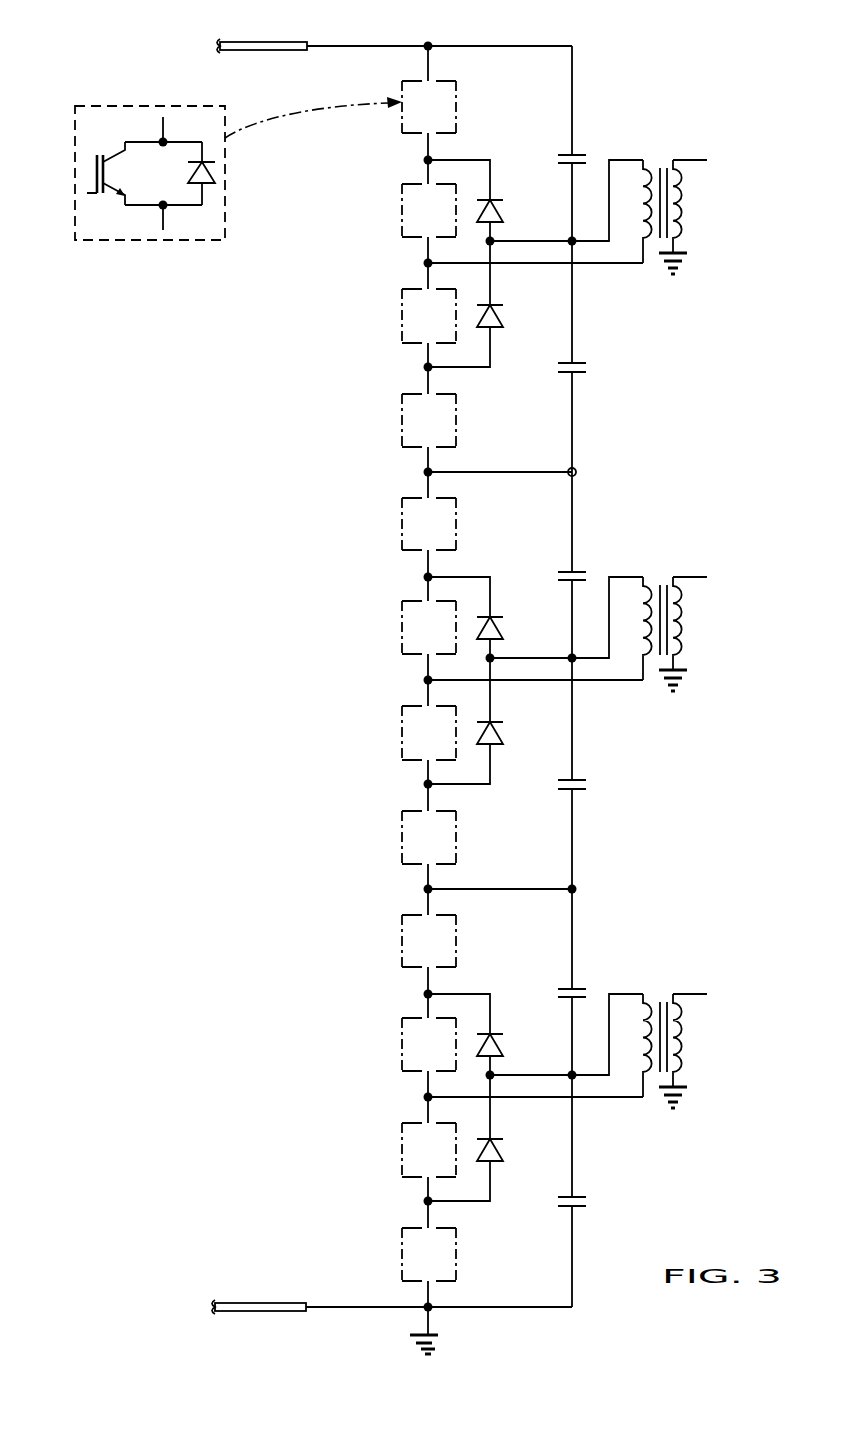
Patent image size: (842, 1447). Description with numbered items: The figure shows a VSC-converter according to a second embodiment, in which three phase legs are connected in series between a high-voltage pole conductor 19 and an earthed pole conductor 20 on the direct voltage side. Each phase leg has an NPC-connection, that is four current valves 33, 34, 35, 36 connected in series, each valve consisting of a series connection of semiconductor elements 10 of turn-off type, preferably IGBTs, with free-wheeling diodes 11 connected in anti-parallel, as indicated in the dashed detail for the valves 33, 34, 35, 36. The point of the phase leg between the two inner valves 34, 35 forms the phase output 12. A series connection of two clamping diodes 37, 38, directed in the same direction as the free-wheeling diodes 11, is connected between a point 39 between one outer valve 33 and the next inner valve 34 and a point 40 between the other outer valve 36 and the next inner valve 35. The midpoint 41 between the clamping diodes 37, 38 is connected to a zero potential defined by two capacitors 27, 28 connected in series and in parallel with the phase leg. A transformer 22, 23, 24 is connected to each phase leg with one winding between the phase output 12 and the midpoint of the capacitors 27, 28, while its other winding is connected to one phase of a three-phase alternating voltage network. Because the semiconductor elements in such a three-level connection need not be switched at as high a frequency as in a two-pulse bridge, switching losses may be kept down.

The semiconductor element of turn-off type 10 is at (95, 167).
The free-wheeling diode 11 is at (214, 177).
The phase output 12 is at (427, 263).
The pole conductor 19 is at (348, 46).
The pole conductor 20 is at (332, 1307).
The transformer 22 is at (666, 164).
The transformer 23 is at (655, 580).
The transformer 24 is at (655, 994).
The capacitor 27 is at (574, 154).
The capacitor 28 is at (578, 365).
The current valve 33 is at (402, 91).
The current valve 34 is at (402, 196).
The current valve 35 is at (402, 301).
The current valve 36 is at (402, 406).
The clamping diode 37 is at (499, 212).
The clamping diode 38 is at (500, 320).
The point 39 is at (427, 160).
The point 40 is at (427, 367).
The midpoint 41 is at (495, 241).